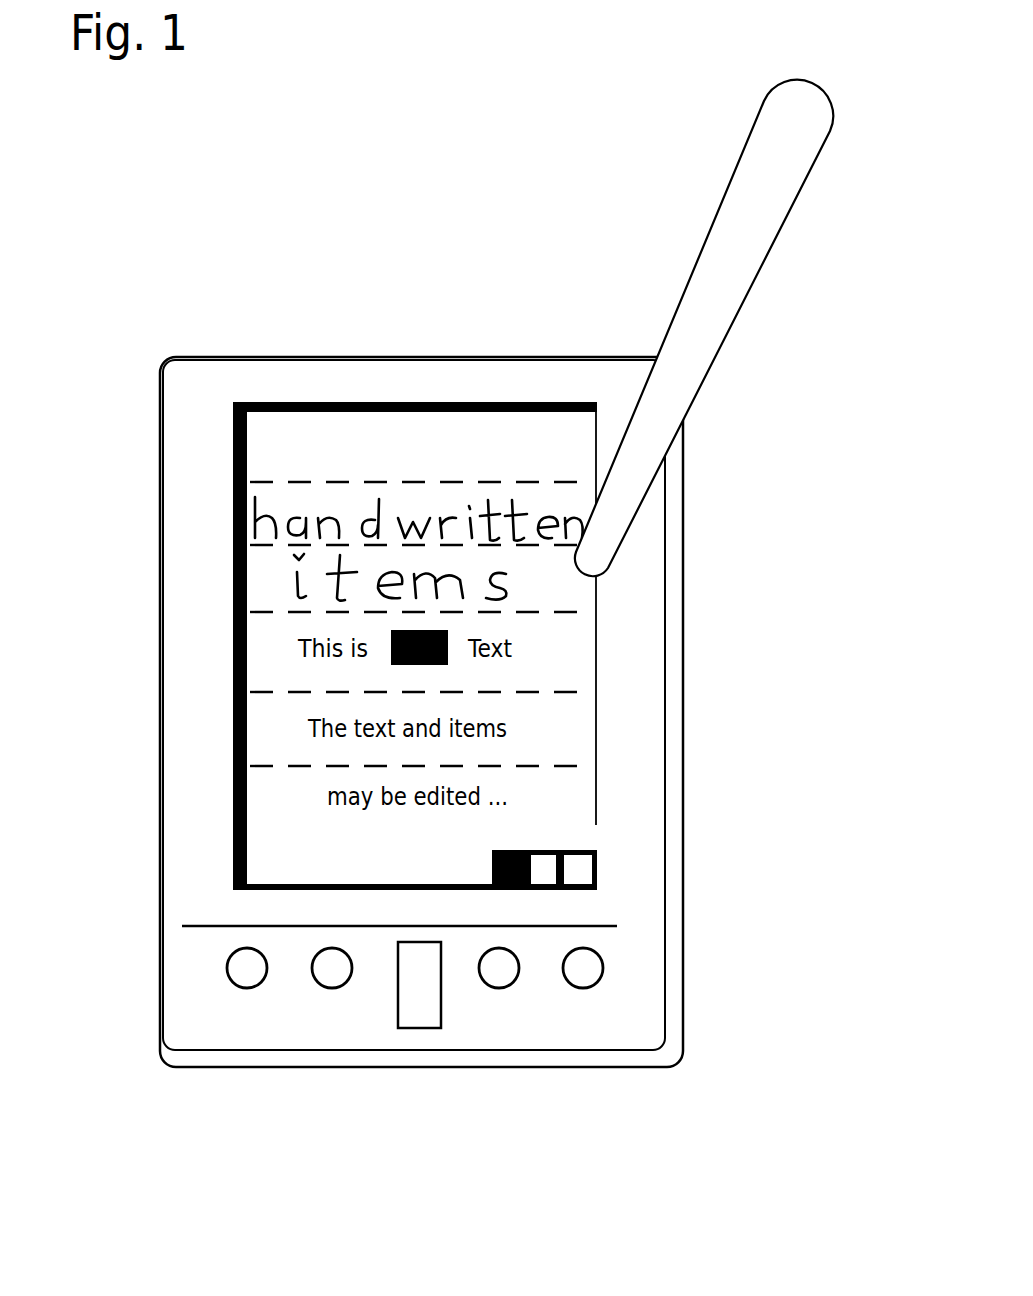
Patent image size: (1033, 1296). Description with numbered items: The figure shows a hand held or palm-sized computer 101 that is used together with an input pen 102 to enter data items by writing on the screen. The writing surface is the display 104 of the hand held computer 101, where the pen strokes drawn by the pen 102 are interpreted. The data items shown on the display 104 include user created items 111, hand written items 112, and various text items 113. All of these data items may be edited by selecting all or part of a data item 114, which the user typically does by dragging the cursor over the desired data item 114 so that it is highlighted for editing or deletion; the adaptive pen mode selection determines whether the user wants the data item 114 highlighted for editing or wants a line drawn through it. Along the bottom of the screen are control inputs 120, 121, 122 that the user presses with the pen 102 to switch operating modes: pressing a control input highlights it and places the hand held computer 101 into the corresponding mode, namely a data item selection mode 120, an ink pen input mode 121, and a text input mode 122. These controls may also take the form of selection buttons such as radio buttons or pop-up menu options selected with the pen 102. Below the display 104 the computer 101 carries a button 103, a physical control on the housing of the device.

The hand-held computer 101 is at (525, 712).
The input pen 102 is at (742, 328).
The navigation button 103 is at (509, 1041).
The display 104 is at (235, 643).
The user created items 111 is at (282, 379).
The hand written items 112 is at (304, 504).
The text items 113 is at (320, 626).
The selected data item 114 is at (586, 626).
The data item selection mode control input 120 is at (474, 855).
The ink pen input mode control input 121 is at (566, 855).
The text input mode control input 122 is at (580, 888).